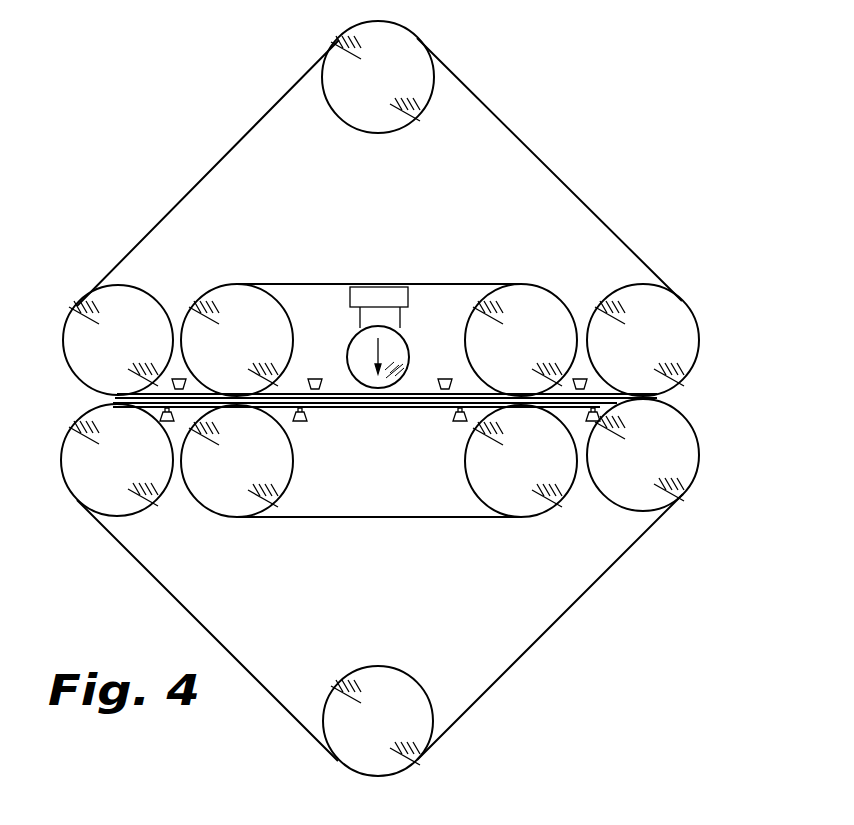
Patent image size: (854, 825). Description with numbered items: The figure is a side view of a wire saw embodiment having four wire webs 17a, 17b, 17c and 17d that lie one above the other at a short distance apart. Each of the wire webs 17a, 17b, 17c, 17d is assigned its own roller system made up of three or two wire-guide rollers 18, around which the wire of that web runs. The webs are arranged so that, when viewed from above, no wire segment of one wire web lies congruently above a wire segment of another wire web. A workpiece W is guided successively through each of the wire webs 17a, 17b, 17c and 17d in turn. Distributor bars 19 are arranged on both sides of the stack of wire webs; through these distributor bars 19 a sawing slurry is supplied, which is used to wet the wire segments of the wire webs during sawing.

The wire web 17a is at (332, 378).
The wire web 17b is at (210, 384).
The wire web 17c is at (191, 419).
The wire web 17d is at (368, 424).
The wire-guide rollers 18 is at (550, 305).
The distributor bars 19 is at (446, 378).
The workpiece W is at (397, 350).